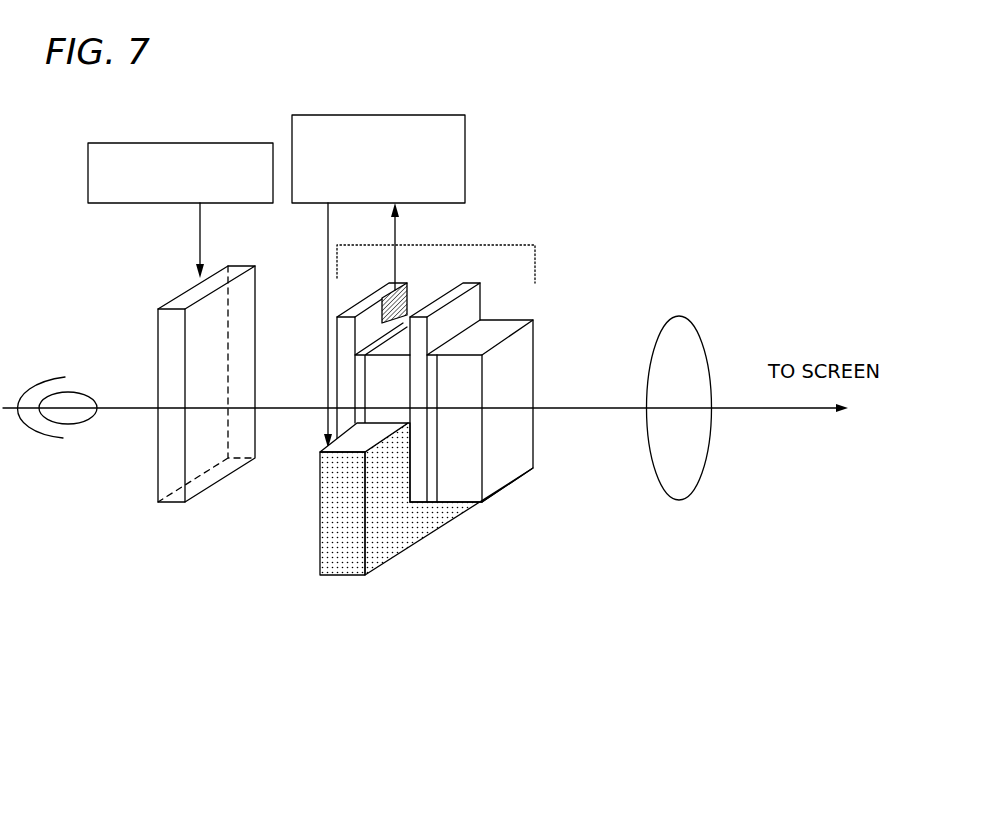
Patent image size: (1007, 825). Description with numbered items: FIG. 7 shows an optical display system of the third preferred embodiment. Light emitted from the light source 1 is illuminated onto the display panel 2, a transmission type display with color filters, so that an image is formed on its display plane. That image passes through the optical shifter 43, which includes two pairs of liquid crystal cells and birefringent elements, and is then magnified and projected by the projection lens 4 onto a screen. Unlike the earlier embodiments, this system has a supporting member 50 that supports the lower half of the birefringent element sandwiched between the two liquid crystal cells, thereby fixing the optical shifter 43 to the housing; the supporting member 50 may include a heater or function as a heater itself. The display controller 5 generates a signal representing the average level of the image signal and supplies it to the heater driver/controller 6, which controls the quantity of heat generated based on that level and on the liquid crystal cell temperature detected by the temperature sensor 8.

The light source 1 is at (40, 384).
The display panel 2 is at (172, 502).
The projection lens 4 is at (690, 498).
The display controller 5 is at (200, 143).
The heater driver/controller 6 is at (383, 116).
The temperature sensor 8 is at (408, 284).
The optical shifter 43 is at (490, 244).
The supporting member 50 is at (350, 578).